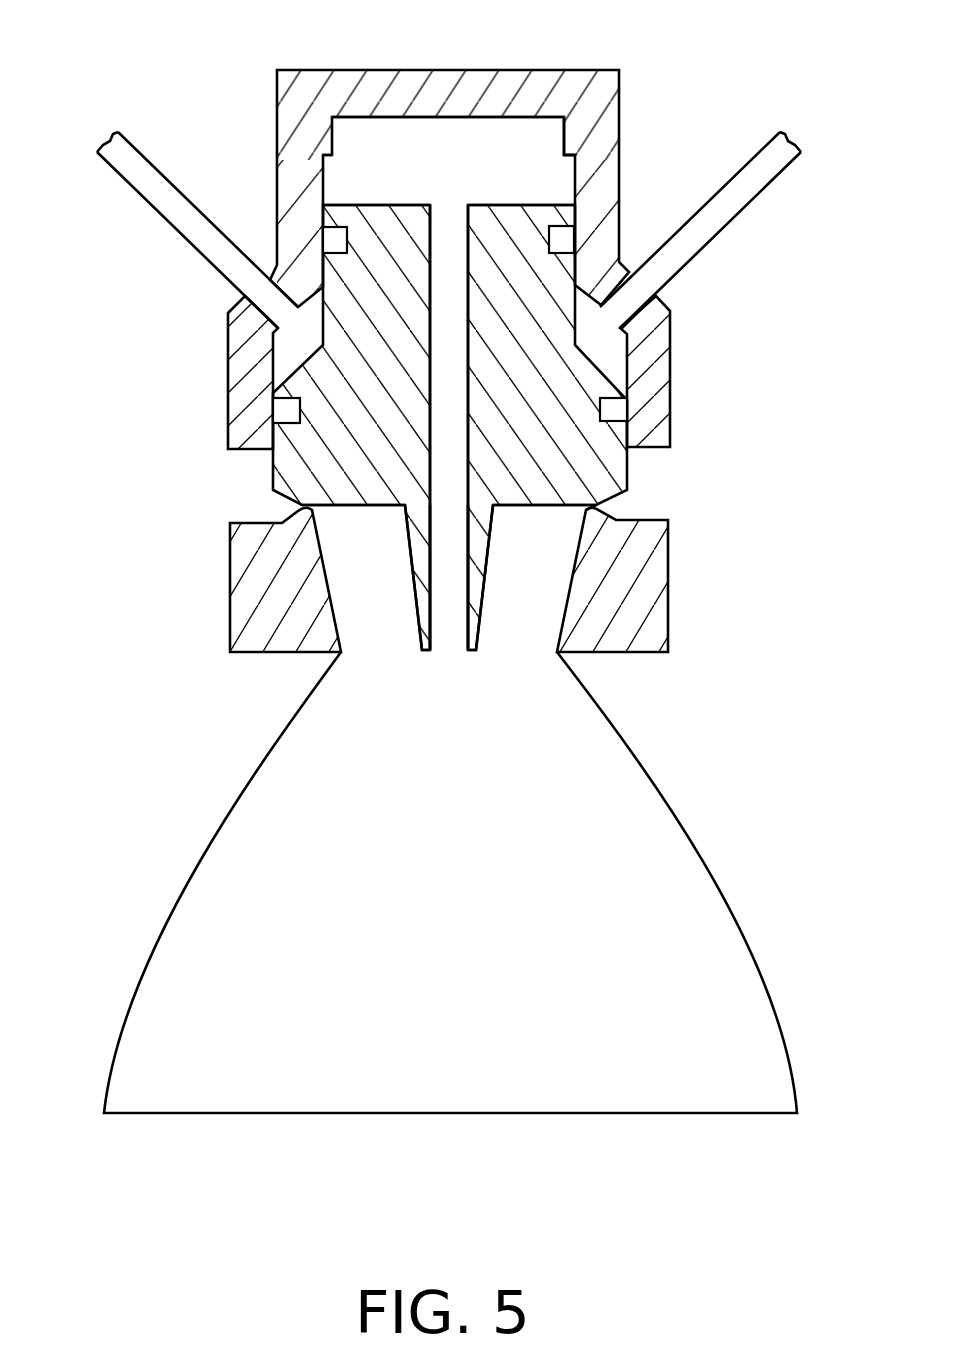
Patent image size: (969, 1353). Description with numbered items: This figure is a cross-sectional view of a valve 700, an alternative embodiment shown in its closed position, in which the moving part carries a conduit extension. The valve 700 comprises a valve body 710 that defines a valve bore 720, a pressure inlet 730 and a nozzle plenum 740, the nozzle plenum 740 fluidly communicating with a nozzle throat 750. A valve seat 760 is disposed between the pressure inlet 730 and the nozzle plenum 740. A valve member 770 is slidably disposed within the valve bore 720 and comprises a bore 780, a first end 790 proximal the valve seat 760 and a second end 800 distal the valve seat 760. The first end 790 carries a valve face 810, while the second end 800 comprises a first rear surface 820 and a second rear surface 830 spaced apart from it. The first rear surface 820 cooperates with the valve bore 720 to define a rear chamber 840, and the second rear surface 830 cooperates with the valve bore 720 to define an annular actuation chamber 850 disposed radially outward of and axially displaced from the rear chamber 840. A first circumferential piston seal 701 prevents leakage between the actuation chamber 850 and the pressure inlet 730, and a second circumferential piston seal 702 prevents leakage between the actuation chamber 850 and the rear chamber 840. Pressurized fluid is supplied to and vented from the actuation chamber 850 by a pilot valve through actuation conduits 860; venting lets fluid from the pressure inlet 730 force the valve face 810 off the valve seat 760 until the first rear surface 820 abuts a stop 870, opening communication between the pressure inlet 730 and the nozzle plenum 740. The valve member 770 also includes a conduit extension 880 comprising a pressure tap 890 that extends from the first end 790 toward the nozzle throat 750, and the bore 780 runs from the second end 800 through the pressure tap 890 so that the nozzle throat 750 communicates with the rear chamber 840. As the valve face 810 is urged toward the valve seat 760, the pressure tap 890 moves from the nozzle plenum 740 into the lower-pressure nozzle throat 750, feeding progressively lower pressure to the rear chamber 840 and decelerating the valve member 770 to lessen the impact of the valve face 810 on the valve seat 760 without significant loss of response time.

The valve 700 is at (631, 52).
The first circumferential piston seal 701 is at (613, 408).
The second circumferential piston seal 702 is at (333, 238).
The valve body 710 is at (447, 70).
The valve bore 720 is at (572, 209).
The pressure inlet 730 is at (265, 507).
The nozzle plenum 740 is at (560, 540).
The nozzle throat 750 is at (559, 652).
The valve seat 760 is at (590, 490).
The valve member 770 is at (582, 443).
The bore 780 is at (443, 355).
The first end 790 is at (358, 452).
The second end 800 is at (510, 257).
The valve face 810 is at (592, 505).
The first rear surface 820 is at (375, 205).
The second rear surface 830 is at (603, 368).
The rear chamber 840 is at (458, 185).
The annular actuation chamber 850 is at (293, 340).
The actuation conduits 860 is at (150, 180).
The stop 870 is at (567, 160).
The conduit extension 880 is at (438, 690).
The pressure tap 890 is at (475, 650).